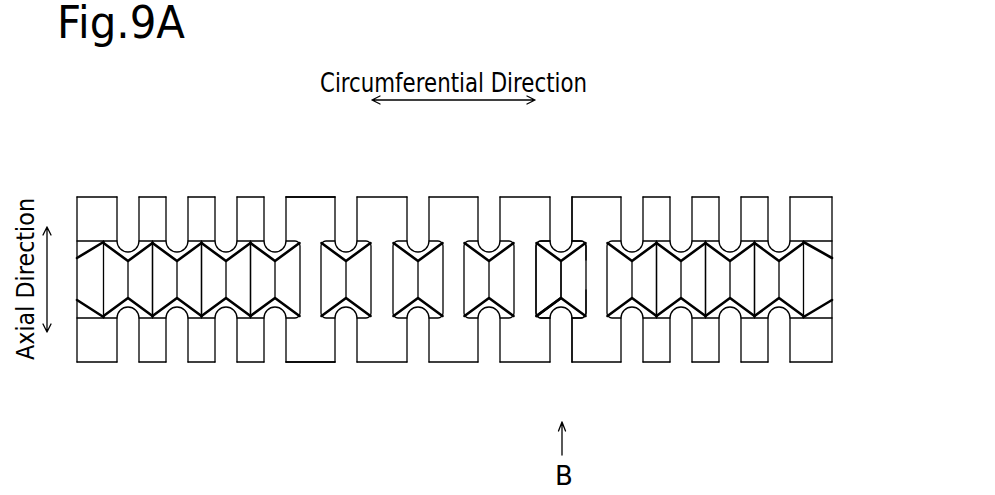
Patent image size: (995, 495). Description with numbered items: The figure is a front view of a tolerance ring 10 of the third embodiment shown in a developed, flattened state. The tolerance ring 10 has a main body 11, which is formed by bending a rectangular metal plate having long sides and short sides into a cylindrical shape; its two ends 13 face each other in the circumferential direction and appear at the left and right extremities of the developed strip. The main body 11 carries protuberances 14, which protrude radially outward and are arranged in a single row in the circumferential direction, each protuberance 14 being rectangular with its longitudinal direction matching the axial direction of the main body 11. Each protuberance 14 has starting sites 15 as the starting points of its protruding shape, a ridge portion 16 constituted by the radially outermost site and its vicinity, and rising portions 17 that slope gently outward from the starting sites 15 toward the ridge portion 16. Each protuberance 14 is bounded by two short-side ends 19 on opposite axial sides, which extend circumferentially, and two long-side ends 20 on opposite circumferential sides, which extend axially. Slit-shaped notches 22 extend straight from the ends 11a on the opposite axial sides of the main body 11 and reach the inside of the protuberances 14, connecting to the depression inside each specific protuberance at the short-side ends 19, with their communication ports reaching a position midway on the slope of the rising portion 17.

The tolerance ring 10 is at (141, 95).
The main body 11 is at (250, 192).
The ends of the main body 11a is at (306, 197).
The ends 13 is at (76, 197).
The protuberance 14 is at (100, 229).
The starting site 15 is at (580, 240).
The ridge portion 16 is at (558, 267).
The rising portion 17 is at (543, 293).
The short-side end 19 is at (549, 241).
The long-side end 20 is at (587, 298).
The notch 22 is at (570, 207).